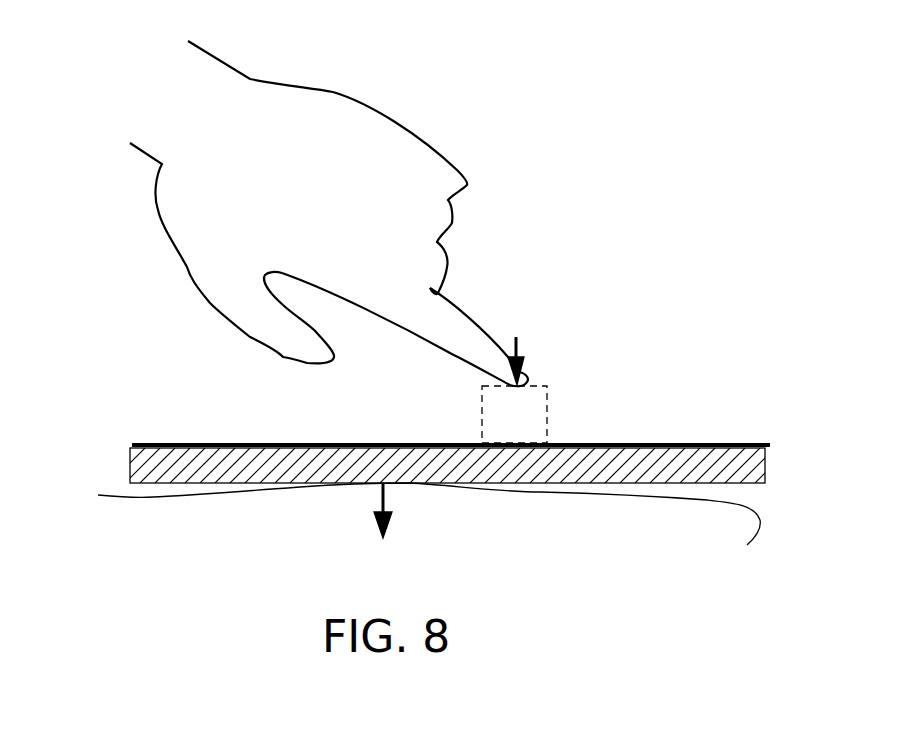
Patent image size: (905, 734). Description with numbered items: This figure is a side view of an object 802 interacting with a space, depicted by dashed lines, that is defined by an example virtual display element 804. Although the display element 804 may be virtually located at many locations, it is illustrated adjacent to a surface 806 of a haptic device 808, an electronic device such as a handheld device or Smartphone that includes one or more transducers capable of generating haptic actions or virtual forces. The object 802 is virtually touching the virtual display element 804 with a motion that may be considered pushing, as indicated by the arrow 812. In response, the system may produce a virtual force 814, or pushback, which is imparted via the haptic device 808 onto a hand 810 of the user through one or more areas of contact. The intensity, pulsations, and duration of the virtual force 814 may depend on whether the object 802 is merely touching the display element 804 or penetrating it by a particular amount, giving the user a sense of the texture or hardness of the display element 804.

The object 802 is at (482, 343).
The virtual display element 804 is at (533, 428).
The surface 806 is at (625, 444).
The haptic device 808 is at (128, 465).
The hand 810 is at (605, 535).
The arrow 812 is at (518, 347).
The virtual force 814 is at (382, 525).